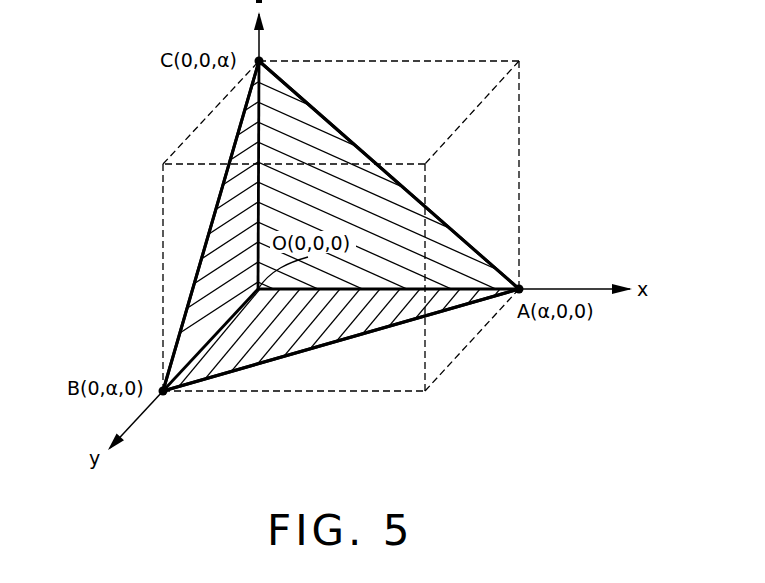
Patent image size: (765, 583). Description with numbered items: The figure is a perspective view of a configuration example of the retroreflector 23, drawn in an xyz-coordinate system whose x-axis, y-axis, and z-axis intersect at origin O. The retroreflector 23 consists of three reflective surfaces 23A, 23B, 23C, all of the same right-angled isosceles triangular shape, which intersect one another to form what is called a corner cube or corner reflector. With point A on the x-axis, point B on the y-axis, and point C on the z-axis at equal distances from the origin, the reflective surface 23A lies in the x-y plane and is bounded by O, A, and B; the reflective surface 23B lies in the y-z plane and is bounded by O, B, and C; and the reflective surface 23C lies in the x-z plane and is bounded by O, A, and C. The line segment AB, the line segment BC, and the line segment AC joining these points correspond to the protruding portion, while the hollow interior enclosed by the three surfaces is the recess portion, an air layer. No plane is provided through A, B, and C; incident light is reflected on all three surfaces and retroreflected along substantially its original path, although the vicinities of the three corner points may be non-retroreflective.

The retroreflector 23 is at (311, 227).
The reflective surface 23A is at (323, 333).
The reflective surface 23B is at (225, 260).
The reflective surface 23C is at (312, 132).
The line segment AB is at (392, 327).
The line segment AC is at (432, 210).
The line segment BC is at (188, 302).